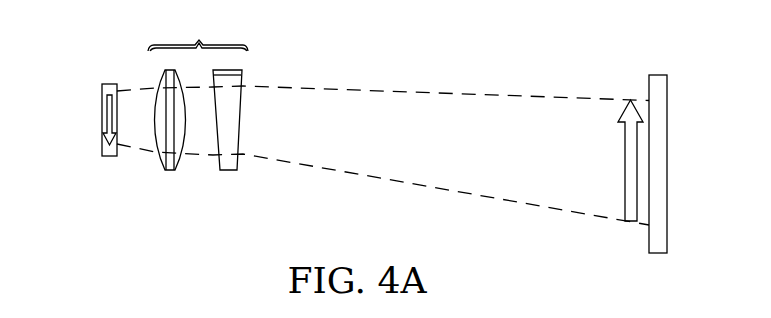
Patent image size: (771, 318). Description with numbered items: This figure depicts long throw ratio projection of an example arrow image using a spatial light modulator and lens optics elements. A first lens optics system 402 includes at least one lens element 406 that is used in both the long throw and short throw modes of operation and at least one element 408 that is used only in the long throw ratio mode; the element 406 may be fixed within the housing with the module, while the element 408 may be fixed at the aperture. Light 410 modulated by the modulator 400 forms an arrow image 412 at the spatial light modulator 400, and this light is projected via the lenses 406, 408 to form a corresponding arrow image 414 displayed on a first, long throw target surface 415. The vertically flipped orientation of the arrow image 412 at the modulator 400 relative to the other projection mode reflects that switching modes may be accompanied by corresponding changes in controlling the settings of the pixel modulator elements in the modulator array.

The spatial light modulator 400 is at (102, 145).
The first lens optics system 402 is at (195, 119).
The lens element 406 is at (172, 170).
The lens element 408 is at (227, 170).
The light 410 is at (466, 89).
The arrow image 412 is at (102, 112).
The arrow image 414 is at (623, 173).
The target surface 415 is at (667, 165).